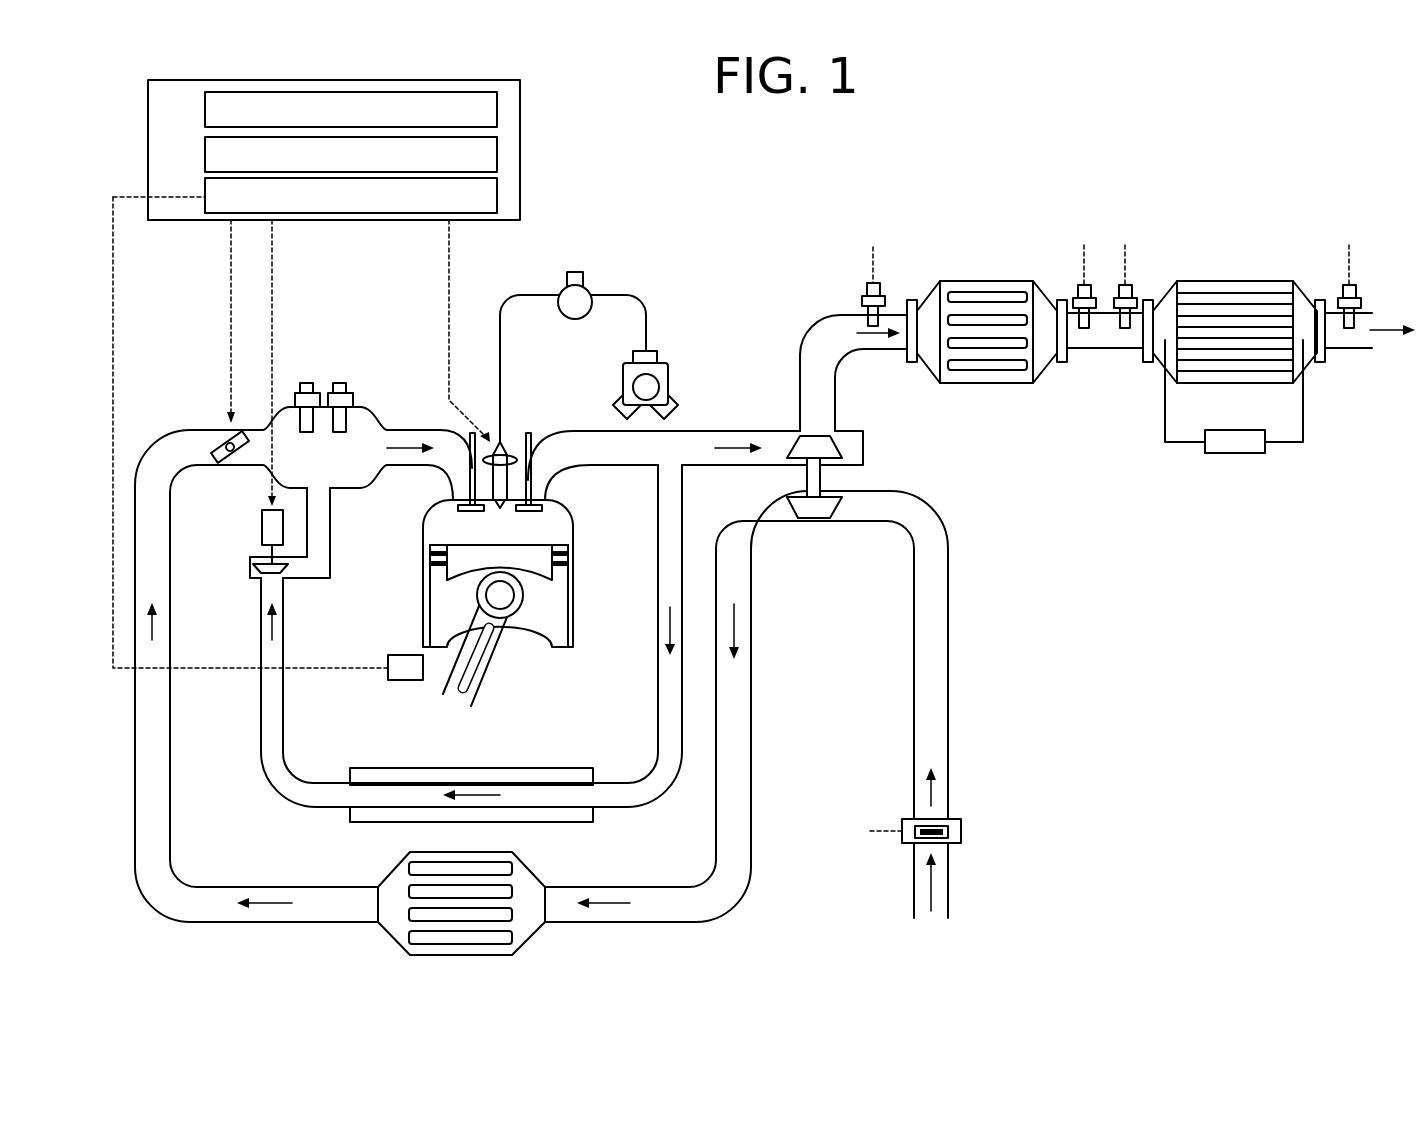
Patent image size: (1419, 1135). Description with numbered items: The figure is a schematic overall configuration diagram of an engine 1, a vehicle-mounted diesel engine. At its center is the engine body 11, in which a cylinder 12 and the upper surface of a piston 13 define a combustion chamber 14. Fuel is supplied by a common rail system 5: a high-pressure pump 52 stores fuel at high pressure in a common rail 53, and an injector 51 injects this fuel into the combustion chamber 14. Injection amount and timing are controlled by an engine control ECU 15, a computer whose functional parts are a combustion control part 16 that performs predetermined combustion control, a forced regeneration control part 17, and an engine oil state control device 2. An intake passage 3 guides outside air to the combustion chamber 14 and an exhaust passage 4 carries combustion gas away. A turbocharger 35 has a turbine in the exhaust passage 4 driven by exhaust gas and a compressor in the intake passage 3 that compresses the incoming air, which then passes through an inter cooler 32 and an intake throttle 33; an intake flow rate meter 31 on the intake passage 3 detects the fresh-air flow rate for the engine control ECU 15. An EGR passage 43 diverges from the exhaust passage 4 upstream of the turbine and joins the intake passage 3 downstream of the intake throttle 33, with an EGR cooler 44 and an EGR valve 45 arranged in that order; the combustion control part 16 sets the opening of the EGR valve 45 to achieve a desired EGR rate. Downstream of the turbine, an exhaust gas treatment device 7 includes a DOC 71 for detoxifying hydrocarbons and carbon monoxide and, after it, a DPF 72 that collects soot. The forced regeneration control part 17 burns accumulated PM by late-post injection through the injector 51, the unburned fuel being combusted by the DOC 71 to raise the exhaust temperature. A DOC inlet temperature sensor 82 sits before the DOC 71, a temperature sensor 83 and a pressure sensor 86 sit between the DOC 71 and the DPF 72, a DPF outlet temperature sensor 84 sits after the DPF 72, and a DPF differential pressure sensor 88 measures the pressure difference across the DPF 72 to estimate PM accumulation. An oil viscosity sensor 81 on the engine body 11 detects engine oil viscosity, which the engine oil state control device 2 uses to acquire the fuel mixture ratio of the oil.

The engine 1 is at (1326, 131).
The engine oil state control device 2 is at (497, 195).
The intake passage 3 is at (950, 718).
The exhaust passage 4 is at (812, 338).
The common rail system 5 is at (587, 372).
The exhaust gas treatment device 7 is at (1118, 330).
The engine body 11 is at (504, 571).
The cylinder 12 is at (573, 530).
The piston 13 is at (533, 620).
The combustion chamber 14 is at (440, 530).
The engine control ECU 15 is at (148, 150).
The combustion control part 16 is at (497, 113).
The forced regeneration control part 17 is at (497, 154).
The intake flow rate meter 31 is at (961, 832).
The inter cooler 32 is at (540, 928).
The intake throttle 33 is at (222, 440).
The turbocharger 35 is at (822, 478).
The EGR passage 43 is at (657, 597).
The EGR cooler 44 is at (567, 822).
The EGR valve 45 is at (262, 528).
The injector 51 is at (505, 455).
The high-pressure pump 52 is at (668, 350).
The common rail 53 is at (584, 318).
The DOC 71 is at (978, 281).
The DPF 72 is at (1228, 281).
The oil viscosity sensor 81 is at (400, 655).
The DOC inlet temperature sensor 82 is at (866, 295).
The temperature sensor 83 is at (1133, 298).
The DPF outlet temperature sensor 84 is at (1355, 298).
The pressure sensor 86 is at (1077, 298).
The DPF differential pressure sensor 88 is at (1240, 453).